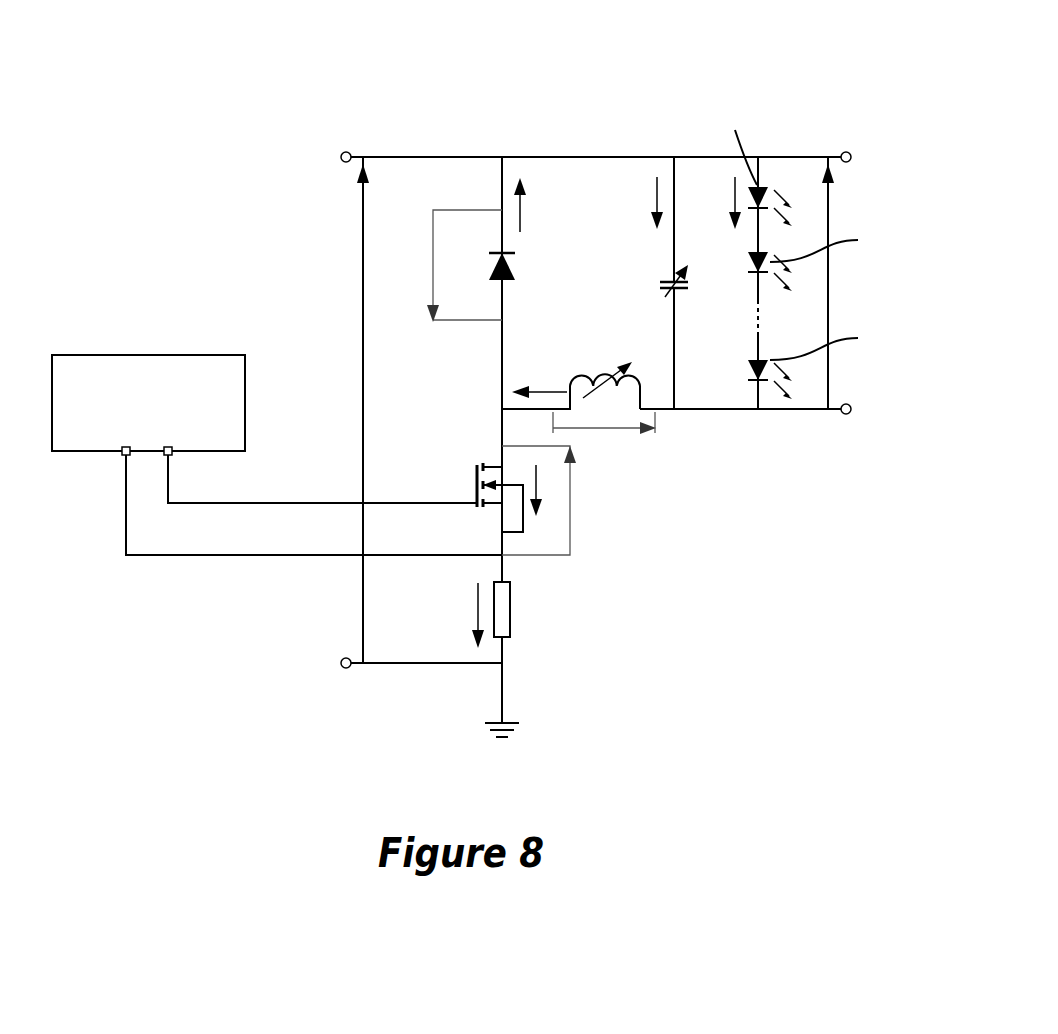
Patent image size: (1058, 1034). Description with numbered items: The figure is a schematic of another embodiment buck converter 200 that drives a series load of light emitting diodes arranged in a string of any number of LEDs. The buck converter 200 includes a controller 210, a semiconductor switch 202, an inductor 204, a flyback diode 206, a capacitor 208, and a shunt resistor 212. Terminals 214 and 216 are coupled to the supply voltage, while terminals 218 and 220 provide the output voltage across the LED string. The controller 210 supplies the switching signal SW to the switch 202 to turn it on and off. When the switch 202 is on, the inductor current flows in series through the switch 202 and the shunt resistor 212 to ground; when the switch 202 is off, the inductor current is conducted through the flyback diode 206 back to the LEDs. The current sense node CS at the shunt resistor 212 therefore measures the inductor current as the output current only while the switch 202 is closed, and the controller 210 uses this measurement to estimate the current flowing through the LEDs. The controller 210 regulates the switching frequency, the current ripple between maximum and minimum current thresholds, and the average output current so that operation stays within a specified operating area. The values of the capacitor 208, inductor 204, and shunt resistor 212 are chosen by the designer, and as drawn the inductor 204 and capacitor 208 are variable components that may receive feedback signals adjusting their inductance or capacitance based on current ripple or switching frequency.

The buck converter 200 is at (150, 98).
The semiconductor switch 202 is at (475, 486).
The inductor 204 is at (640, 393).
The flyback diode 206 is at (506, 279).
The capacitor 208 is at (690, 282).
The controller 210 is at (147, 355).
The shunt resistor 212 is at (512, 598).
The terminal 214 is at (340, 156).
The terminal 216 is at (340, 666).
The terminal 218 is at (847, 151).
The terminal 220 is at (848, 415).